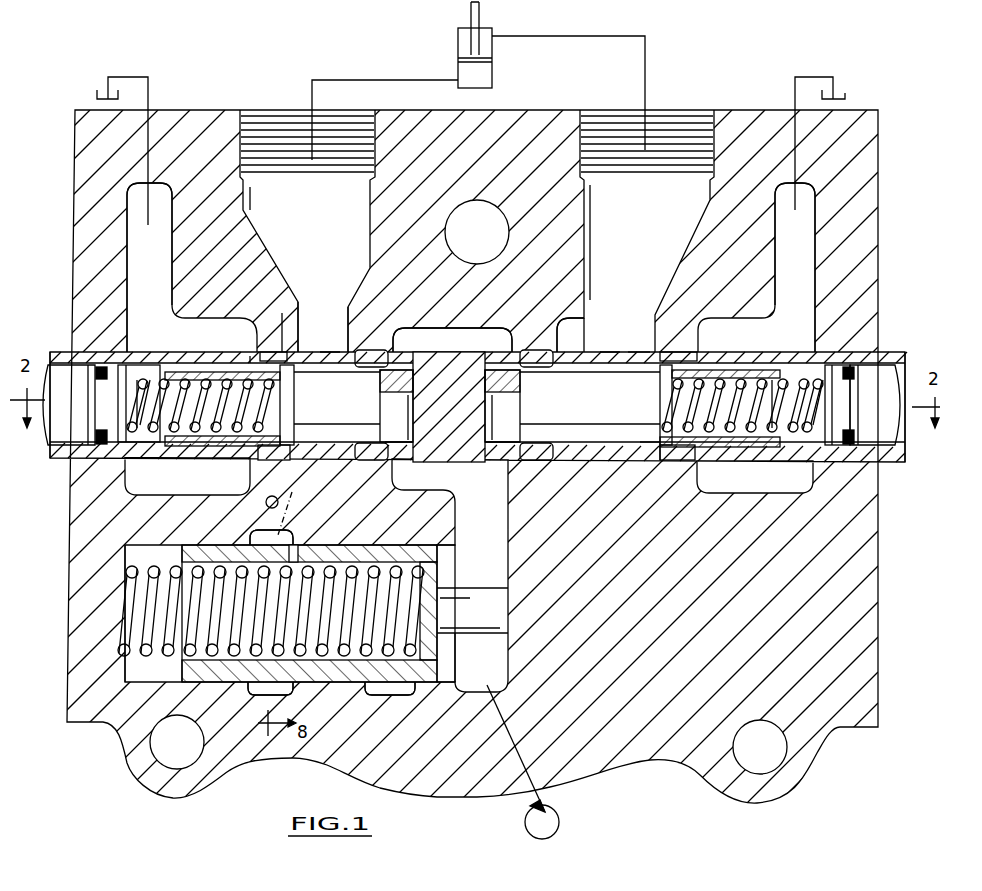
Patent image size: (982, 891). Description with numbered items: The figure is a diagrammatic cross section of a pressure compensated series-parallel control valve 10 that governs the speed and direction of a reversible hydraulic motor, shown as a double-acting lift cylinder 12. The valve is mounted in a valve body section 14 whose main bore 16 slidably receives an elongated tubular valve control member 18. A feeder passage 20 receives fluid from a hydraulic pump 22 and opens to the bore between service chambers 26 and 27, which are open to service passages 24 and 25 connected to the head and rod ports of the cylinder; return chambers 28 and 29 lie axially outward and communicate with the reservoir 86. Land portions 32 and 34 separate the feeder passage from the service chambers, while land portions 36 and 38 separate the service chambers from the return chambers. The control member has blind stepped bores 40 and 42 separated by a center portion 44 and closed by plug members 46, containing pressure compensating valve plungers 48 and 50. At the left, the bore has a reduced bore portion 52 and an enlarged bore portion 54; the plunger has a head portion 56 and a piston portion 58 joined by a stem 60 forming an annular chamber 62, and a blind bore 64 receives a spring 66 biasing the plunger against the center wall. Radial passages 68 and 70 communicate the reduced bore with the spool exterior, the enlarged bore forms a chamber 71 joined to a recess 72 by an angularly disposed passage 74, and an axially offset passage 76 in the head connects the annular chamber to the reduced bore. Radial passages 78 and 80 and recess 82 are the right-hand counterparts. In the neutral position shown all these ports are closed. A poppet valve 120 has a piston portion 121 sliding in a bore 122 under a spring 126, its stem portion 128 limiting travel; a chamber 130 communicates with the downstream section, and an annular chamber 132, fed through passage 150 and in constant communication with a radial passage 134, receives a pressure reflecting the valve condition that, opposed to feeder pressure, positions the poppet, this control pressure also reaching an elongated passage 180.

The pressure compensated control valve 10 is at (747, 101).
The double-acting lift cylinder 12 is at (456, 36).
The valve body section 14 is at (528, 110).
The main bore 16 is at (863, 355).
The valve control member 18 is at (272, 462).
The feeder passage 20 is at (462, 333).
The hydraulic pump 22 is at (559, 824).
The service passage 24 is at (258, 110).
The service passage 25 is at (679, 113).
The service chamber 26 is at (332, 267).
The service chamber 27 is at (586, 344).
The return chamber 28 is at (157, 262).
The return chamber 29 is at (805, 244).
The land portion 32 is at (364, 350).
The land portion 34 is at (530, 352).
The land portion 36 is at (262, 352).
The land portion 38 is at (668, 462).
The stepped bore 40 is at (128, 440).
The stepped bore 42 is at (792, 445).
The center portion 44 is at (461, 388).
The plug member 46 is at (55, 430).
The pressure compensating valve plunger 48 is at (296, 372).
The pressure compensating valve plunger 50 is at (648, 455).
The reduced bore portion 52 is at (633, 350).
The enlarged bore portion 54 is at (148, 446).
The head portion 56 is at (510, 410).
The piston portion 58 is at (185, 446).
The stem 60 is at (330, 416).
The annular chamber 62 is at (328, 352).
The blind bore 64 is at (200, 380).
The spring 66 is at (148, 380).
The radial passage 68 is at (385, 460).
The radial passage 70 is at (262, 460).
The chamber 71 is at (140, 372).
The recess 72 is at (279, 322).
The angularly disposed passage 74 is at (250, 356).
The axially offset passage 76 is at (383, 381).
The radial passage 78 is at (548, 460).
The radial passage 80 is at (680, 462).
The recess 82 is at (668, 354).
The reservoir 86 is at (97, 95).
The poppet valve 120 is at (440, 566).
The piston portion 121 is at (310, 682).
The bore 122 is at (152, 682).
The spring 126 is at (148, 568).
The stem portion 128 is at (482, 633).
The chamber 130 is at (385, 695).
The annular chamber 132 is at (262, 692).
The radial passage 134 is at (298, 545).
The passage 150 is at (285, 528).
The elongated passage 180 is at (266, 505).